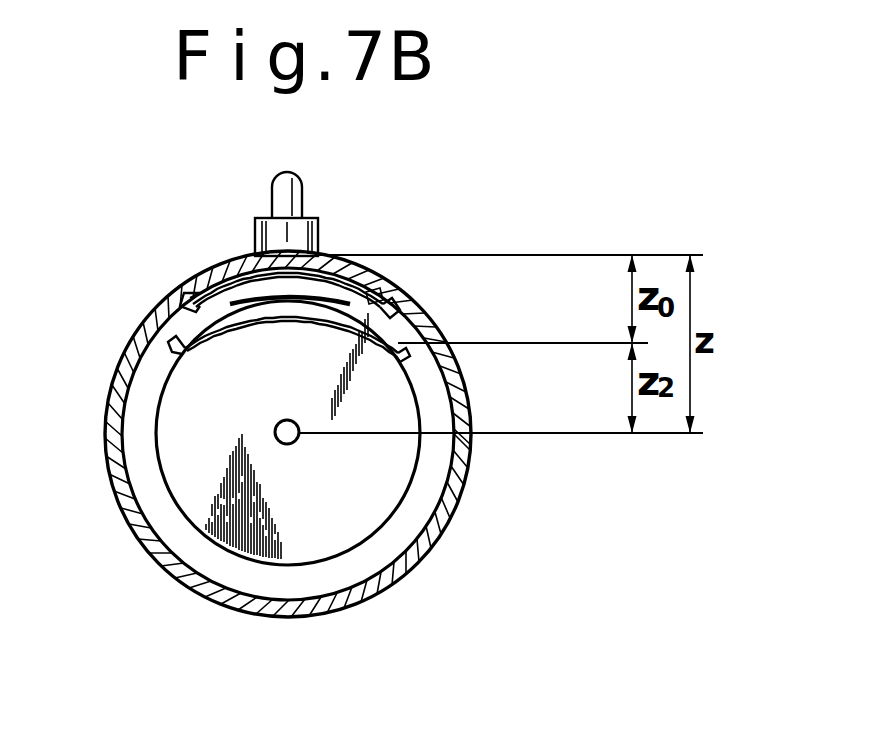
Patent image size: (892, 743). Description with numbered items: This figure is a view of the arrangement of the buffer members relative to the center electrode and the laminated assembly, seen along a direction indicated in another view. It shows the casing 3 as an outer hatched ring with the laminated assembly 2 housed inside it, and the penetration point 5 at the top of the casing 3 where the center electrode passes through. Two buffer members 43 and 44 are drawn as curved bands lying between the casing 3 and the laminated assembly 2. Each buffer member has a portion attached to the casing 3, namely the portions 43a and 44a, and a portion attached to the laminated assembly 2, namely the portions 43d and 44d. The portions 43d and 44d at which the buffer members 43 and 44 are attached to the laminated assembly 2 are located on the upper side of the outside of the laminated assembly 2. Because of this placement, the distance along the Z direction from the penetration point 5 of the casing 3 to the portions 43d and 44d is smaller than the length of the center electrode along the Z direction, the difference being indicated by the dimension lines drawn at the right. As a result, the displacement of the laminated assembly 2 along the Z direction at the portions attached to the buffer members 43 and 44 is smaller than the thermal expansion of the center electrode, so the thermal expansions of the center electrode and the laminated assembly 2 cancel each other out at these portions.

The laminated assembly 2 is at (397, 490).
The casing 3 is at (463, 477).
The penetration point 5 is at (320, 240).
The buffer member 43 is at (335, 277).
The portion of buffer member attached to casing 43a is at (378, 284).
The portion of buffer member attached to laminated assembly 43d is at (176, 342).
The buffer member 44 is at (248, 293).
The portion of buffer member attached to casing 44a is at (182, 297).
The portion of buffer member attached to laminated assembly 44d is at (402, 348).